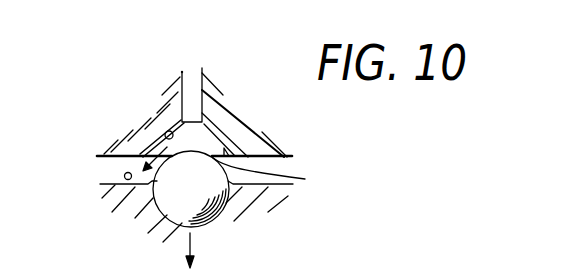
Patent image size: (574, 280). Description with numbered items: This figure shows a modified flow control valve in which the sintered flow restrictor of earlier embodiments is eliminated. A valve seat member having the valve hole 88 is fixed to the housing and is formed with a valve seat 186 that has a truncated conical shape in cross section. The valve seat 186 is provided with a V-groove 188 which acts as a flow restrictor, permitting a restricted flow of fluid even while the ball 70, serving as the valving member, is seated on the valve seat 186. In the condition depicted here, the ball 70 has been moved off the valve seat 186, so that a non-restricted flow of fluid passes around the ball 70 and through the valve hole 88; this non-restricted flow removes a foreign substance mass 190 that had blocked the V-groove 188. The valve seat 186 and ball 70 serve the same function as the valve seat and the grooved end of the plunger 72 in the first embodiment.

The ball 70 is at (207, 222).
The plunger 72 is at (270, 200).
The valve hole 88 is at (203, 86).
The valve seat 186 is at (276, 175).
The V-groove 188 is at (169, 130).
The foreign substance mass 190 is at (124, 176).